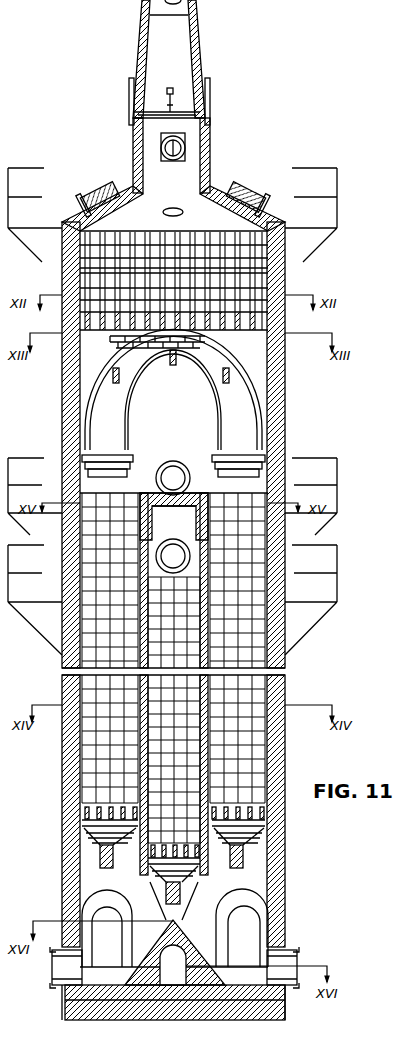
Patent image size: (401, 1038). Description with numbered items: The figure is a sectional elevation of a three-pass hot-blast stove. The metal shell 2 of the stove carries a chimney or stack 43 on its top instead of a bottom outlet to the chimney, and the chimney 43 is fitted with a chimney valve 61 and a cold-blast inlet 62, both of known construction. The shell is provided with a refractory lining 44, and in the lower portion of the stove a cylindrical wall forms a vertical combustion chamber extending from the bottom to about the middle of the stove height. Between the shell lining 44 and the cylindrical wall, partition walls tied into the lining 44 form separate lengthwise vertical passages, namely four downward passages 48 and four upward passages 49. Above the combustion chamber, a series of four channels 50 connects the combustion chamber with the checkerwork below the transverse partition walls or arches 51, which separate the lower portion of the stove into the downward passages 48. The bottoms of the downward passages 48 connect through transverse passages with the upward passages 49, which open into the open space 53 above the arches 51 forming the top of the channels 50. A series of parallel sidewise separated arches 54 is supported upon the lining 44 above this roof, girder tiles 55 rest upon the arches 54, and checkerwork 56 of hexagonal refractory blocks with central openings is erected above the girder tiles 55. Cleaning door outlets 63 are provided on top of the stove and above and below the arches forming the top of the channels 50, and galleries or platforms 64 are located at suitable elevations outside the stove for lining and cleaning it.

The metal shell 2 is at (286, 827).
The chimney or stack 43 is at (200, 66).
The refractory lining 44 is at (65, 393).
The downward passages 48 is at (174, 748).
The upward passages 49 is at (105, 740).
The channels 50 is at (174, 580).
The transverse partition walls or arches 51 is at (174, 519).
The open space 53 is at (173, 403).
The arches 54 is at (162, 368).
The girder tiles 55 is at (88, 330).
The checkerwork 56 is at (62, 285).
The chimney valve 61 is at (183, 110).
The cold-blast inlet 62 is at (178, 160).
The cleaning door outlets 63 is at (173, 517).
The galleries or platforms 64 is at (325, 232).